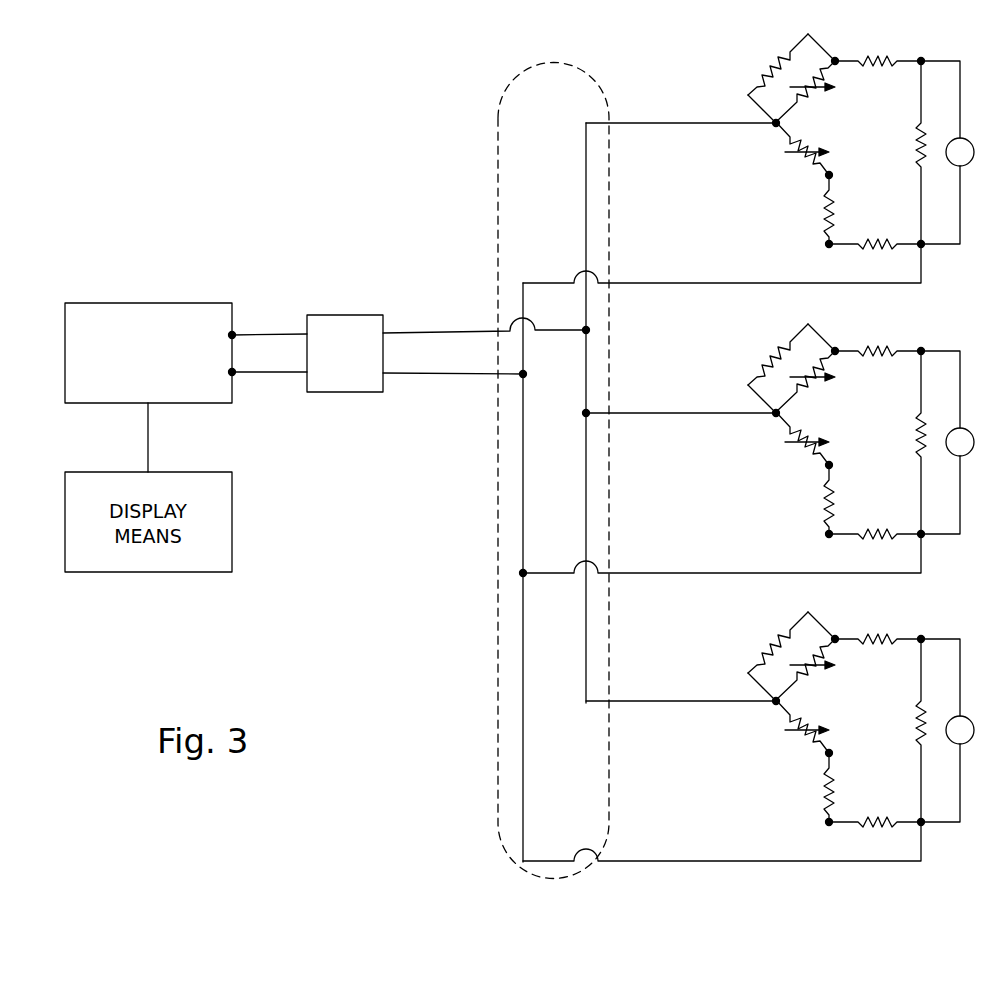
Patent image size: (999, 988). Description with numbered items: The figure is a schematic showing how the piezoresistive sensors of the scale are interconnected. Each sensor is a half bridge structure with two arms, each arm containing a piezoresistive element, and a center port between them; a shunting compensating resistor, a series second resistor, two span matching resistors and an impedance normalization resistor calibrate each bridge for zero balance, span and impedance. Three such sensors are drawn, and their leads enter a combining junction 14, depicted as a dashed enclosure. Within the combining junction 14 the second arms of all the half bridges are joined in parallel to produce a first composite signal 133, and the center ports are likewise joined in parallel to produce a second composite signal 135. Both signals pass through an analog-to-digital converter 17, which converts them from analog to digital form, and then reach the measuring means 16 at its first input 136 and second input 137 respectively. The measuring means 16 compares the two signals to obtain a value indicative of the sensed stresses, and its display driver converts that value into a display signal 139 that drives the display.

The combining junction 14 is at (565, 63).
The measuring means 16 is at (125, 303).
The analog-to-digital converter 17 is at (347, 315).
The first composite signal 133 is at (437, 374).
The second composite signal 135 is at (437, 330).
The first input 136 is at (232, 335).
The second input 137 is at (232, 372).
The display signal 139 is at (148, 440).